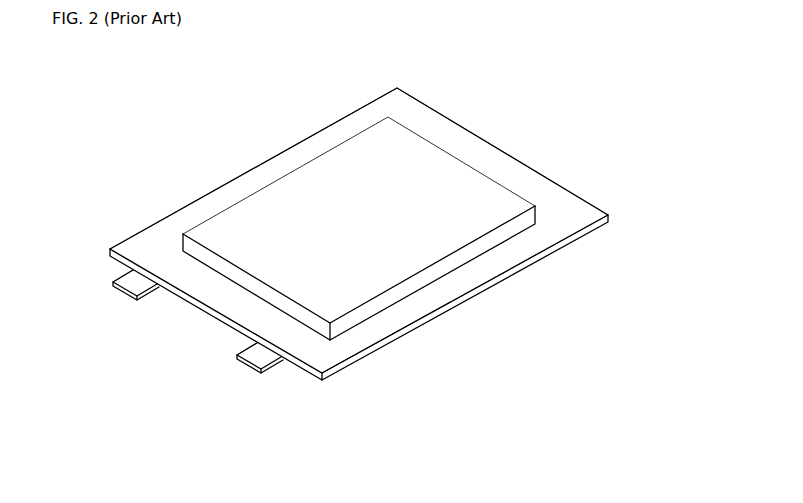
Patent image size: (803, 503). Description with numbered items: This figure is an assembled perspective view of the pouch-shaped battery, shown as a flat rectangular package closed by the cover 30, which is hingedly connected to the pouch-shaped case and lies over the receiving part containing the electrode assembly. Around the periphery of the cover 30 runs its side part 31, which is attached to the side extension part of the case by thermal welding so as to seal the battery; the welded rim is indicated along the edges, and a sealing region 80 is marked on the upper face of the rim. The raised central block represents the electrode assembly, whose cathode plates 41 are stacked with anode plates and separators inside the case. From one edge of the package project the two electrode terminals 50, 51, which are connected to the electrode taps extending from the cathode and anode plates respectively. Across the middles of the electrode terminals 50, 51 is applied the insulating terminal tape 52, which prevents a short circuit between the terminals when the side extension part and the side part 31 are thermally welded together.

The cover 30 is at (557, 208).
The side part 31 is at (226, 186).
The cathode plates 41 is at (316, 163).
The electrode terminal 50 is at (116, 290).
The electrode terminal 51 is at (240, 360).
The terminal tape 52 is at (128, 274).
The sealing surface 80 is at (355, 333).